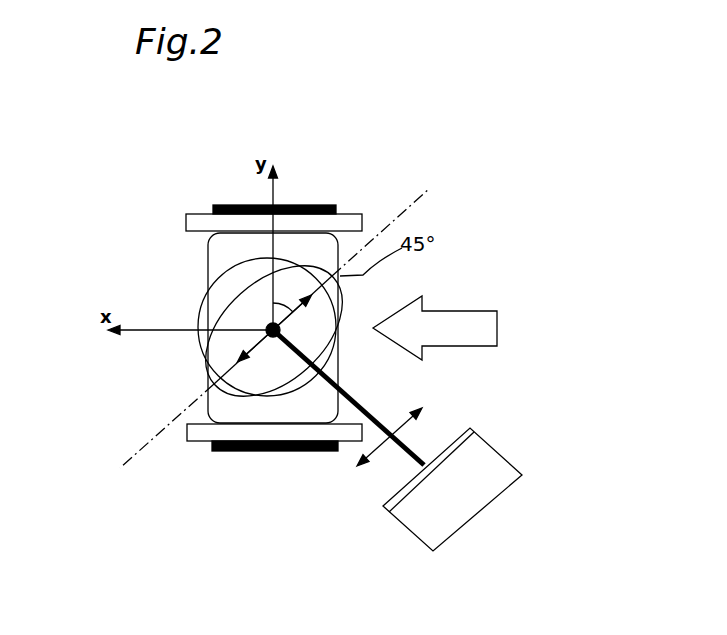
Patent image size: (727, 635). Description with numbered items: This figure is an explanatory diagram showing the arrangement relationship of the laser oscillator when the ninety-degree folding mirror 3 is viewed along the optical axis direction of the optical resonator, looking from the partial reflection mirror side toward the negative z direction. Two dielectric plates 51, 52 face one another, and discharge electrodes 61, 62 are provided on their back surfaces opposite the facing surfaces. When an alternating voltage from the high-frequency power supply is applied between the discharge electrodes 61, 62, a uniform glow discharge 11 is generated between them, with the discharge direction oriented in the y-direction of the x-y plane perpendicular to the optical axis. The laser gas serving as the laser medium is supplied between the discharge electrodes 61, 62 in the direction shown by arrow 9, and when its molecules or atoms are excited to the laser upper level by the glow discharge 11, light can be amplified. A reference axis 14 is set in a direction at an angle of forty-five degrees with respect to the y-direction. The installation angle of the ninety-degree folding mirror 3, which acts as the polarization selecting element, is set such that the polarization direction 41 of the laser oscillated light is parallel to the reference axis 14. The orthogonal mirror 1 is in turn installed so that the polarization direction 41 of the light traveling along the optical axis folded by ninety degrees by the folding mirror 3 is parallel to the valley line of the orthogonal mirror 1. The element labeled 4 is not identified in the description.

The orthogonal mirror 1 is at (502, 450).
The 90-degree folding mirror 3 is at (200, 308).
The rotation axis 4 is at (273, 332).
The arrow 9 is at (440, 323).
The glow discharge 11 is at (207, 267).
The reference axis 14 is at (430, 190).
The polarization direction 41 is at (303, 310).
The dielectric plate 51 is at (353, 213).
The dielectric plate 52 is at (195, 443).
The discharge electrode 61 is at (290, 207).
The discharge electrode 62 is at (278, 453).